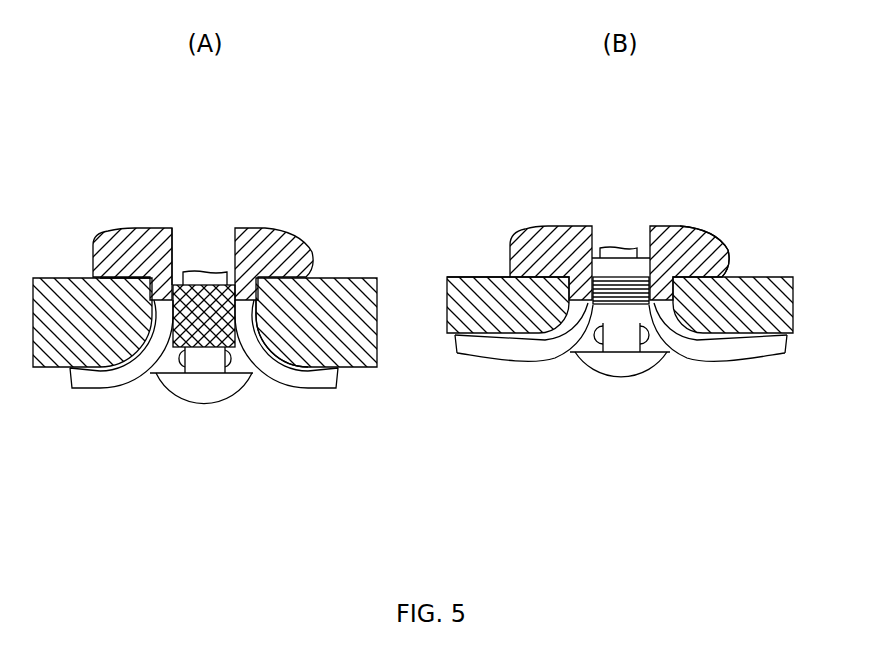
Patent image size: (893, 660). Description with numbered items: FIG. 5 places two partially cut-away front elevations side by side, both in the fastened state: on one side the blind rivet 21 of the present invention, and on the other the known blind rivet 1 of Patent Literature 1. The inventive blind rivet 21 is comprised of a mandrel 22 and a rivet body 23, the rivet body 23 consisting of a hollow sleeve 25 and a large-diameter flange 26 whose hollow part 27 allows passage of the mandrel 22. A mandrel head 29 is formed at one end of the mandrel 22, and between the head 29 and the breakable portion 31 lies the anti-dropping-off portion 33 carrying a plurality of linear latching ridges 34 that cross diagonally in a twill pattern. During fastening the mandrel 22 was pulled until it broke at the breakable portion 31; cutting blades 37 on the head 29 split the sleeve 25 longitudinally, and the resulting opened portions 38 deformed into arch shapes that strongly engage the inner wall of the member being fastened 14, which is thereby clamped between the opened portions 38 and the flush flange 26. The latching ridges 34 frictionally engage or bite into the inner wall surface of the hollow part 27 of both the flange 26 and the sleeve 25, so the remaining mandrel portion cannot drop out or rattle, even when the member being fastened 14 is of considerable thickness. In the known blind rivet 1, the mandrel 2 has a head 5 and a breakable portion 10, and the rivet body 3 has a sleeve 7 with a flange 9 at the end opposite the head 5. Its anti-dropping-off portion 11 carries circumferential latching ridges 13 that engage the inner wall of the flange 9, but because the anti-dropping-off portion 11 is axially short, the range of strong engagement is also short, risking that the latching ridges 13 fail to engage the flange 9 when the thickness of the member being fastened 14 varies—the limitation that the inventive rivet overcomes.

The blind rivet 1 is at (630, 224).
The mandrel 2 is at (642, 228).
The rivet body 3 is at (560, 219).
The head 5 is at (622, 368).
The sleeve 7 is at (470, 280).
The flange 9 is at (722, 247).
The breakable portion 10 is at (623, 249).
The anti-dropping-off portion 11 is at (690, 364).
The latching ridges 13 is at (591, 358).
The member being fastened 14 is at (48, 366).
The blind rivet 21 is at (222, 245).
The mandrel 22 is at (220, 255).
The rivet body 23 is at (222, 237).
The sleeve 25 is at (264, 322).
The flange 26 is at (118, 232).
The hollow part 27 is at (188, 258).
The mandrel head 29 is at (207, 388).
The breakable portion 31 is at (211, 269).
The anti-dropping-off portion 33 is at (192, 376).
The latching ridges 34 is at (100, 296).
The cutting blades 37 is at (146, 380).
The opened portions 38 is at (88, 390).